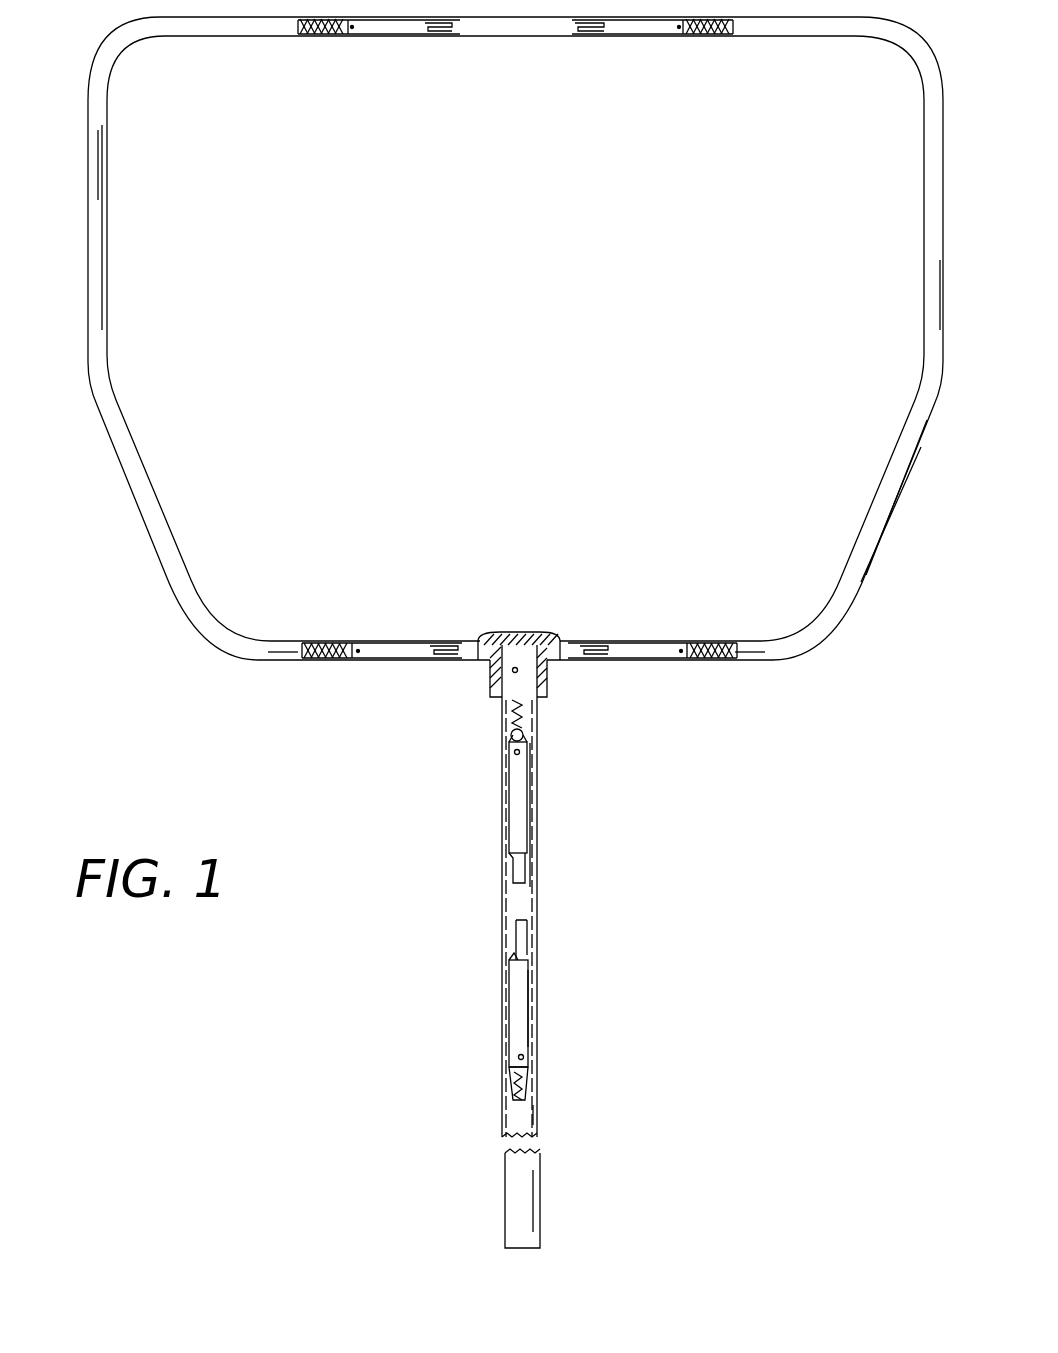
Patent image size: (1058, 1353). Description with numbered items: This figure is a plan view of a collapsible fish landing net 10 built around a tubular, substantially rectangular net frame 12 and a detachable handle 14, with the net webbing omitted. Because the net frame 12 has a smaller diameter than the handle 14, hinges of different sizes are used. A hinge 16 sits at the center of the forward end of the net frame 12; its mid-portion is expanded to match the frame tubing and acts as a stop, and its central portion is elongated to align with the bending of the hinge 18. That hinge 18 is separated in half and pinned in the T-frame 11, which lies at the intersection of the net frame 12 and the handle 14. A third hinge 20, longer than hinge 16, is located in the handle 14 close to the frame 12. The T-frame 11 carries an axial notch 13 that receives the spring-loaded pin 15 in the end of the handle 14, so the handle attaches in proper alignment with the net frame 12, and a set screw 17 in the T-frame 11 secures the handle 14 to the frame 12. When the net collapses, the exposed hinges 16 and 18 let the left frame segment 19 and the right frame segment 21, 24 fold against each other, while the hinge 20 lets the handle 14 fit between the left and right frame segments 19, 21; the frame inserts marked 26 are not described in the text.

The collapsible fish landing net 10 is at (870, 5).
The T-frame 11 is at (497, 640).
The net frame 12 is at (122, 27).
The axial notch 13 is at (494, 690).
The handle 14 is at (541, 1186).
The spring-loaded pin 15 is at (541, 640).
The hinge 16 is at (556, 52).
The set screw 17 is at (518, 670).
The hinge 18 is at (498, 596).
The left frame segment 19 is at (96, 265).
The hinge 20 is at (550, 888).
The right frame segment 21 is at (925, 258).
The right frame segment 24 is at (383, 28).
The clip 26 is at (492, 28).